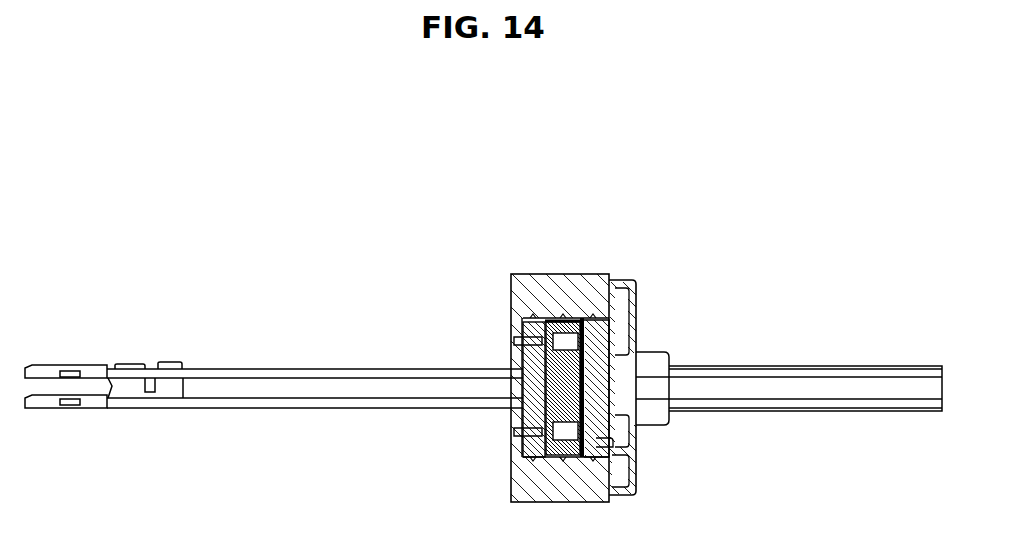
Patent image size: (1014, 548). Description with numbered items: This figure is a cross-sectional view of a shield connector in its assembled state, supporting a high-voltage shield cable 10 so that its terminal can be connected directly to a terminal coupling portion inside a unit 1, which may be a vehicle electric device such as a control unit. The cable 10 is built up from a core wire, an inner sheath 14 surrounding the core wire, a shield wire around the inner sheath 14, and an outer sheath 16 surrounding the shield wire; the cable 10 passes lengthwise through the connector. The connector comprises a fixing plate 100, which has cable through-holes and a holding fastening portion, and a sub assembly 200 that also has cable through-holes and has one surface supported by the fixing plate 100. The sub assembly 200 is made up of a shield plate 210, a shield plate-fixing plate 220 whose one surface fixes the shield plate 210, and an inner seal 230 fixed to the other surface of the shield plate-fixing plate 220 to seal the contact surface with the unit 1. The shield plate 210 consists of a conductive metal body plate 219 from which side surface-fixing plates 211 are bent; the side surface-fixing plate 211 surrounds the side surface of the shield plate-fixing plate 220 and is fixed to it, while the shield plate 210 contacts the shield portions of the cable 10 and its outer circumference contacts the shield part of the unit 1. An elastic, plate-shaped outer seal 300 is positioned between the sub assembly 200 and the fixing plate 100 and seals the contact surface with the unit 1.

The unit 1 is at (510, 471).
The high-voltage shield cable 10 is at (312, 350).
The inner sheath 14 is at (411, 392).
The outer sheath 16 is at (882, 392).
The fixing plate 100 is at (634, 488).
The sub assembly 200 is at (630, 176).
The shield plate 210 is at (660, 218).
The side surface-fixing plate 211 is at (572, 318).
The body plate 219 is at (606, 315).
The shield plate-fixing plate 220 is at (538, 318).
The inner seal 230 is at (522, 322).
The outer seal 300 is at (612, 442).